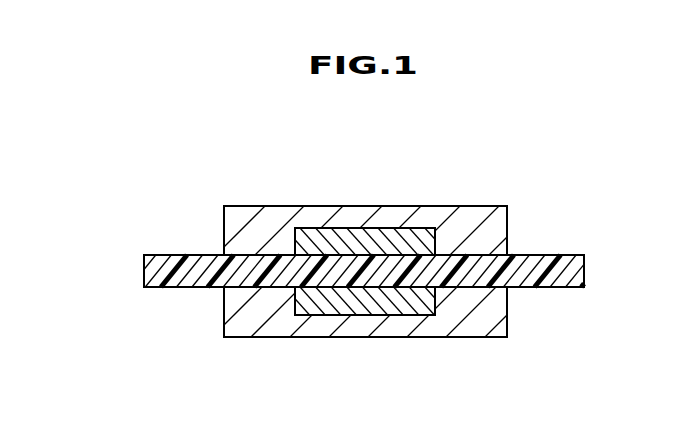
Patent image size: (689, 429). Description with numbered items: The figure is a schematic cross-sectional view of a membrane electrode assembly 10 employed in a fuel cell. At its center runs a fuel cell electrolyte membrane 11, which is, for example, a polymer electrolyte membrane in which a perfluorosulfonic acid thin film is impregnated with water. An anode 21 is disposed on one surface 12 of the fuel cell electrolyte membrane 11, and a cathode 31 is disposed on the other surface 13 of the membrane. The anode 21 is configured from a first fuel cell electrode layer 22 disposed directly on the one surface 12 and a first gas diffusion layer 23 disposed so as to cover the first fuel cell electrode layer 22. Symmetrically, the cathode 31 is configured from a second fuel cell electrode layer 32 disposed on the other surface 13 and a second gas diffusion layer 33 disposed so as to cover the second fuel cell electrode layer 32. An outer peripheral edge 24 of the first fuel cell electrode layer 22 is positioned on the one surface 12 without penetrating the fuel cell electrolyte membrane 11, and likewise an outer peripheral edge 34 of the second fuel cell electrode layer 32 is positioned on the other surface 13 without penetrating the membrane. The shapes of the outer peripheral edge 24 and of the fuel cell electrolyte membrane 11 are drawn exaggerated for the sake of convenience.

The membrane electrode assembly 10 is at (170, 132).
The fuel cell electrolyte membrane 11 is at (143, 268).
The one surface 12 is at (180, 255).
The other surface 13 is at (180, 288).
The anode 21 is at (607, 137).
The first fuel cell electrode layer 22 is at (437, 242).
The first gas diffusion layer 23 is at (440, 206).
The outer peripheral edge 24 is at (292, 252).
The cathode 31 is at (607, 320).
The second fuel cell electrode layer 32 is at (437, 305).
The second gas diffusion layer 33 is at (428, 338).
The outer peripheral edge 34 is at (288, 293).